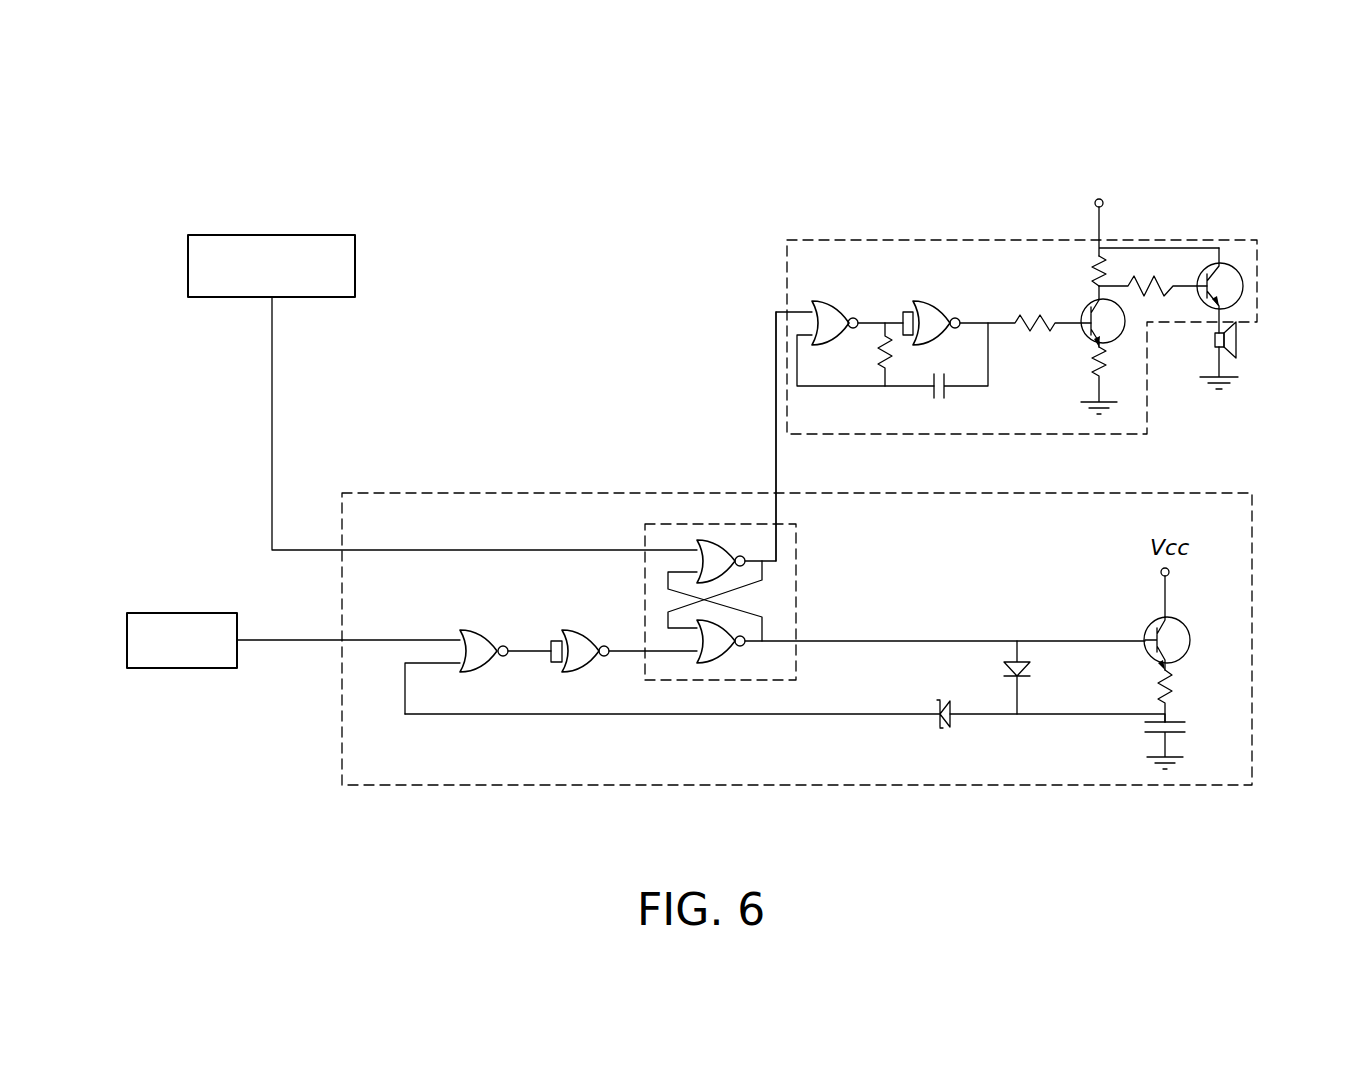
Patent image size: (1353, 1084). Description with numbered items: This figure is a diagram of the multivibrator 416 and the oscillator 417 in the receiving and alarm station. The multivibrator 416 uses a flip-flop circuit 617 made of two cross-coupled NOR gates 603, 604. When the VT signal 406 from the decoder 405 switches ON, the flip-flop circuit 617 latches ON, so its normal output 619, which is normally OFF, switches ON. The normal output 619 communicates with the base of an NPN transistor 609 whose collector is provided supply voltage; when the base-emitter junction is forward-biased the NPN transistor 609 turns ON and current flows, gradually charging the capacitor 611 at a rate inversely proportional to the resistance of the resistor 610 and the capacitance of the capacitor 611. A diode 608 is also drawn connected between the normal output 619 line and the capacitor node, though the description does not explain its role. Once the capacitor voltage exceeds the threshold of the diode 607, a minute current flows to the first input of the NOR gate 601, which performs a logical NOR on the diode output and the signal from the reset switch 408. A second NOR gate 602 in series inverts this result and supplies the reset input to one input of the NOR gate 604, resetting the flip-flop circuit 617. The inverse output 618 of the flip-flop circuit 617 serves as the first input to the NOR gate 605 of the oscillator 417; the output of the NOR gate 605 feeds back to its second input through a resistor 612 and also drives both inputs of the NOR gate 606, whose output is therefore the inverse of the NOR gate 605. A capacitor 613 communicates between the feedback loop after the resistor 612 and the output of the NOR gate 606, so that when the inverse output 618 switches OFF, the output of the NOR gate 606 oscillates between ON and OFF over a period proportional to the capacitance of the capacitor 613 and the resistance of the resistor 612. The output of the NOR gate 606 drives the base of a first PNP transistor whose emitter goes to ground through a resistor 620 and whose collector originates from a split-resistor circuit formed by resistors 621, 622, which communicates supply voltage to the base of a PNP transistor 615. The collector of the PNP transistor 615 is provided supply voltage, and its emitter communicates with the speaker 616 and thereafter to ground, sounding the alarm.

The decoder 405 is at (310, 235).
The VT signal 406 is at (272, 368).
The reset switch 408 is at (162, 613).
The multivibrator 416 is at (355, 803).
The oscillator 417 is at (808, 228).
The NOR gate 601 is at (478, 632).
The second NOR gate 602 is at (577, 632).
The NOR gate 603 is at (713, 540).
The NOR gate 604 is at (720, 664).
The NOR gate 605 is at (830, 300).
The NOR gate 606 is at (945, 300).
The diode 607 is at (942, 729).
The diode 608 is at (1022, 660).
The NPN transistor 609 is at (1188, 641).
The resistor 610 is at (1176, 684).
The capacitor 611 is at (1178, 727).
The resistor 612 is at (875, 366).
The capacitor 613 is at (938, 400).
The PNP transistor 615 is at (1232, 265).
The speaker 616 is at (1236, 345).
The flip-flop circuit 617 is at (633, 518).
The inverse output 618 is at (776, 397).
The normal output 619 is at (862, 640).
The resistor 620 is at (1108, 372).
The resistor 621 is at (1112, 255).
The resistor 622 is at (1163, 284).